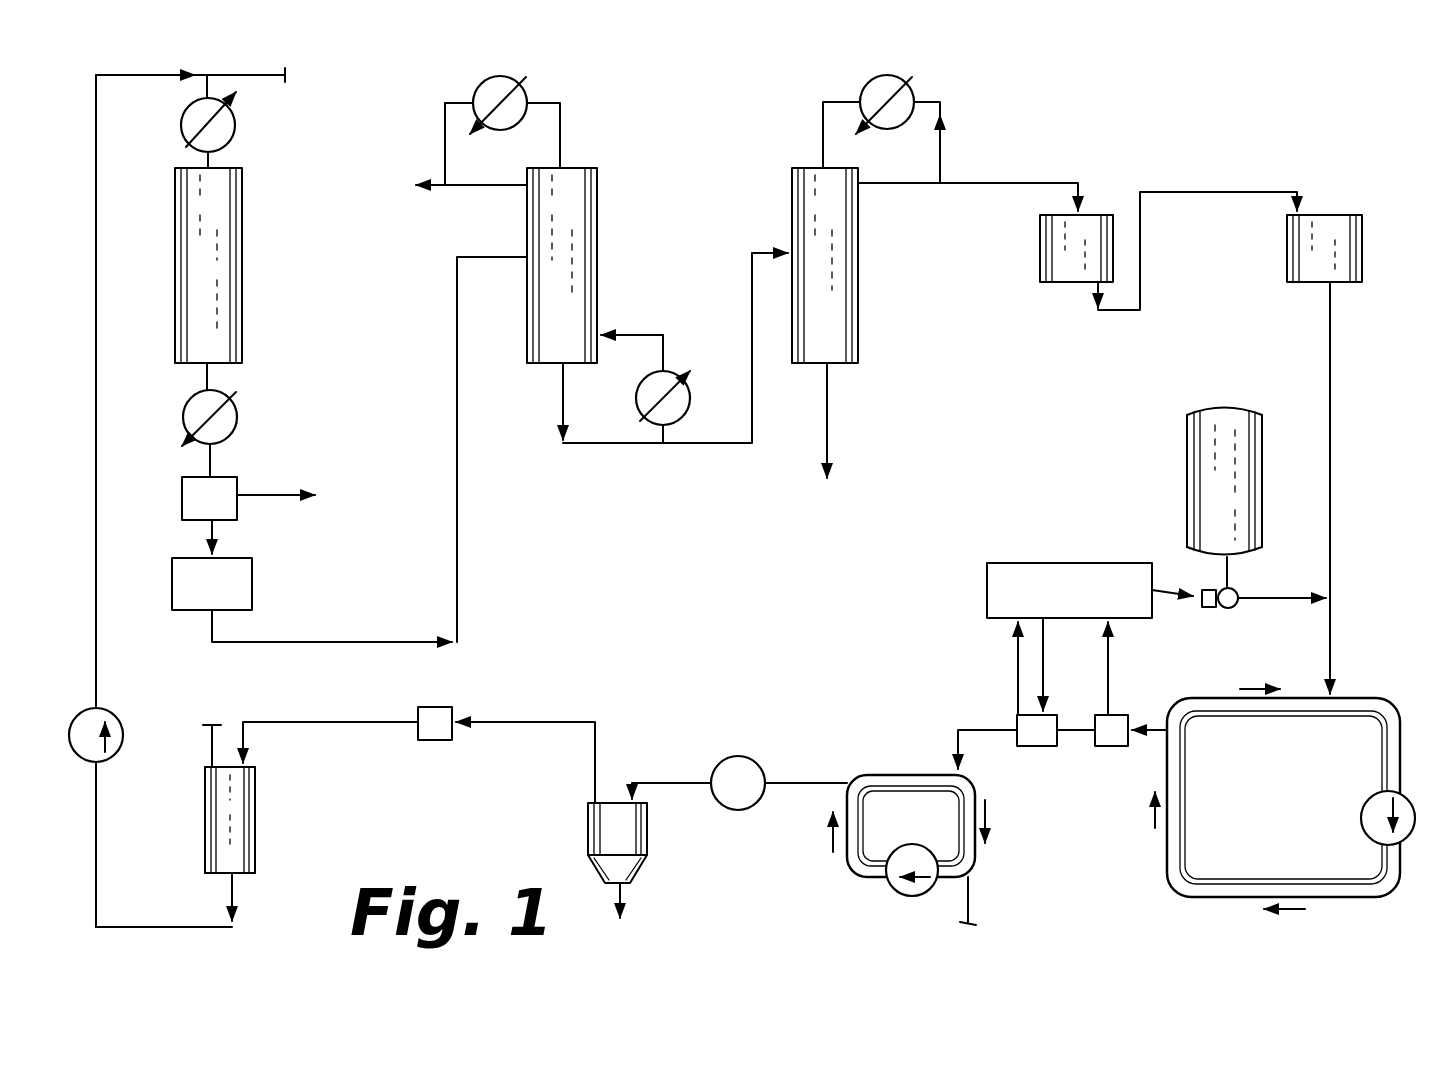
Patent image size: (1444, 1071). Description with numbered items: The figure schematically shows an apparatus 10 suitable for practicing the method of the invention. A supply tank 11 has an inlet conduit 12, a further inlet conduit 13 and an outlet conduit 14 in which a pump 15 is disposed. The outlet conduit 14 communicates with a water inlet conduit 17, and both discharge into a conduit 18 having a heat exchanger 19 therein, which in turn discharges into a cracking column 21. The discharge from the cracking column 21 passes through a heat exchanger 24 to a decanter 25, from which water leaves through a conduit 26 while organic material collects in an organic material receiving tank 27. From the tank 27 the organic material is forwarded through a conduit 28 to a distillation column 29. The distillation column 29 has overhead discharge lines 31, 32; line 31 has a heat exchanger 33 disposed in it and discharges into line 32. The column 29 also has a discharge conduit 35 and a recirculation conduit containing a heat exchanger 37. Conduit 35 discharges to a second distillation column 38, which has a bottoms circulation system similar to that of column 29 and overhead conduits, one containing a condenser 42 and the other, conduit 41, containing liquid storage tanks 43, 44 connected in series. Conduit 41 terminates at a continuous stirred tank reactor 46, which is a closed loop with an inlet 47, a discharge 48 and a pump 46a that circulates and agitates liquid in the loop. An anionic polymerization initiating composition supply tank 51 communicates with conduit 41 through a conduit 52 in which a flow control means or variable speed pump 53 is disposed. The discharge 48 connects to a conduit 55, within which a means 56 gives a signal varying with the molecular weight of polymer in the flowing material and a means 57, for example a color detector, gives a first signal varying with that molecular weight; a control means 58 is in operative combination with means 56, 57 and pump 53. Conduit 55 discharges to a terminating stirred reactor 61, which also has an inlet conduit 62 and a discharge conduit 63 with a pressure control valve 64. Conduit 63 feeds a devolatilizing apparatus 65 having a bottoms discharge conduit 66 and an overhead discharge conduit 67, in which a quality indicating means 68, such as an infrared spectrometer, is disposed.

The apparatus 10 is at (681, 150).
The supply tank 11 is at (245, 822).
The inlet conduit 12 is at (210, 745).
The inlet conduit 13 is at (290, 723).
The outlet conduit 14 is at (237, 893).
The pump 15 is at (120, 748).
The water inlet conduit 17 is at (240, 52).
The conduit 18 is at (205, 90).
The heat exchanger 19 is at (236, 124).
The cracking column 21 is at (230, 200).
The heat exchanger 24 is at (238, 418).
The decanter 25 is at (195, 490).
The conduit 26 is at (268, 494).
The organic material receiving tank 27 is at (240, 578).
The conduit 28 is at (458, 502).
The distillation column 29 is at (575, 220).
The overhead discharge line 31 is at (562, 130).
The overhead discharge line 32 is at (500, 188).
The heat exchanger 33 is at (205, 373).
The discharge conduit 35 is at (698, 447).
The heat exchanger 37 is at (638, 397).
The second distillation column 38 is at (847, 276).
The overhead discharge conduit 41 is at (893, 188).
The condenser 42 is at (870, 85).
The liquid storage tank 43 is at (1046, 244).
The liquid storage tank 44 is at (1338, 268).
The continuous stirred tank reactor 46 is at (1380, 705).
The pump 46a is at (1362, 822).
The inlet 47 is at (1326, 700).
The discharge 48 is at (1165, 728).
The anionic polymerization initiating composition supply tank 51 is at (1200, 450).
The conduit 52 is at (1232, 582).
The variable speed pump 53 is at (1226, 604).
The conduit 55 is at (975, 730).
The signal means 56 is at (1110, 742).
The signal means 57 is at (1030, 740).
The control means 58 is at (1018, 570).
The terminating stirred reactor 61 is at (976, 796).
The inlet conduit 62 is at (970, 892).
The discharge conduit 63 is at (805, 782).
The pressure control valve 64 is at (726, 770).
The devolatilizing apparatus 65 is at (590, 830).
The bottoms discharge conduit 66 is at (628, 893).
The overhead discharge conduit 67 is at (514, 722).
The quality indicating means 68 is at (420, 715).